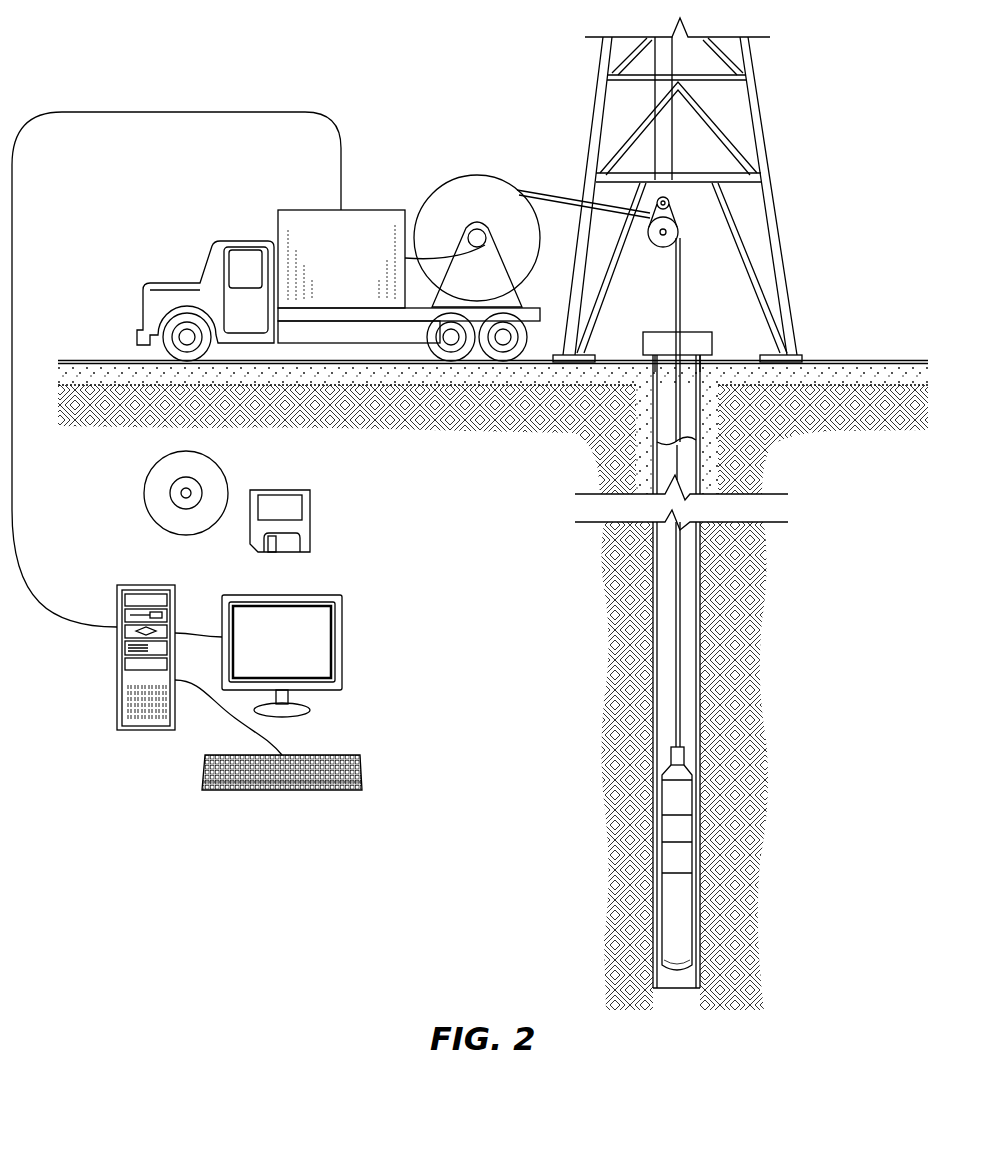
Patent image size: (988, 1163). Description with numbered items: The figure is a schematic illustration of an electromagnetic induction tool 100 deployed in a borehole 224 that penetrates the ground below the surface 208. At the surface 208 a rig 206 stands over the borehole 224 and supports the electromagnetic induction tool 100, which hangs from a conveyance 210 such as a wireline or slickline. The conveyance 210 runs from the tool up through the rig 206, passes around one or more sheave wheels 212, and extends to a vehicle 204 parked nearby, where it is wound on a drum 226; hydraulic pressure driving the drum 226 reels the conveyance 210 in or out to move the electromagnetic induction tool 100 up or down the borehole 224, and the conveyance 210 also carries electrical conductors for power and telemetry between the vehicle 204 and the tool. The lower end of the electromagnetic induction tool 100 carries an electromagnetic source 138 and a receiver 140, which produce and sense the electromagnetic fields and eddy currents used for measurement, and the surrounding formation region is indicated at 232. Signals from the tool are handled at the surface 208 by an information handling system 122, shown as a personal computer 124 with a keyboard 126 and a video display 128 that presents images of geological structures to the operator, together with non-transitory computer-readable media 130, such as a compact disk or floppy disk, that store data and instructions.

The electromagnetic induction tool 100 is at (674, 858).
The information handling system 122 is at (248, 651).
The personal computer 124 is at (145, 585).
The keyboard 126 is at (365, 765).
The video display 128 is at (285, 595).
The non-transitory computer-readable media 130 is at (205, 452).
The electromagnetic source 138 is at (685, 828).
The receiver 140 is at (685, 858).
The vehicle 204 is at (350, 210).
The rig 206 is at (772, 194).
The surface 208 is at (838, 362).
The conveyance 210 is at (675, 612).
The sheave wheels 212 is at (660, 246).
The borehole 224 is at (775, 473).
The drum 226 is at (478, 176).
The wellbore region 232 is at (875, 603).